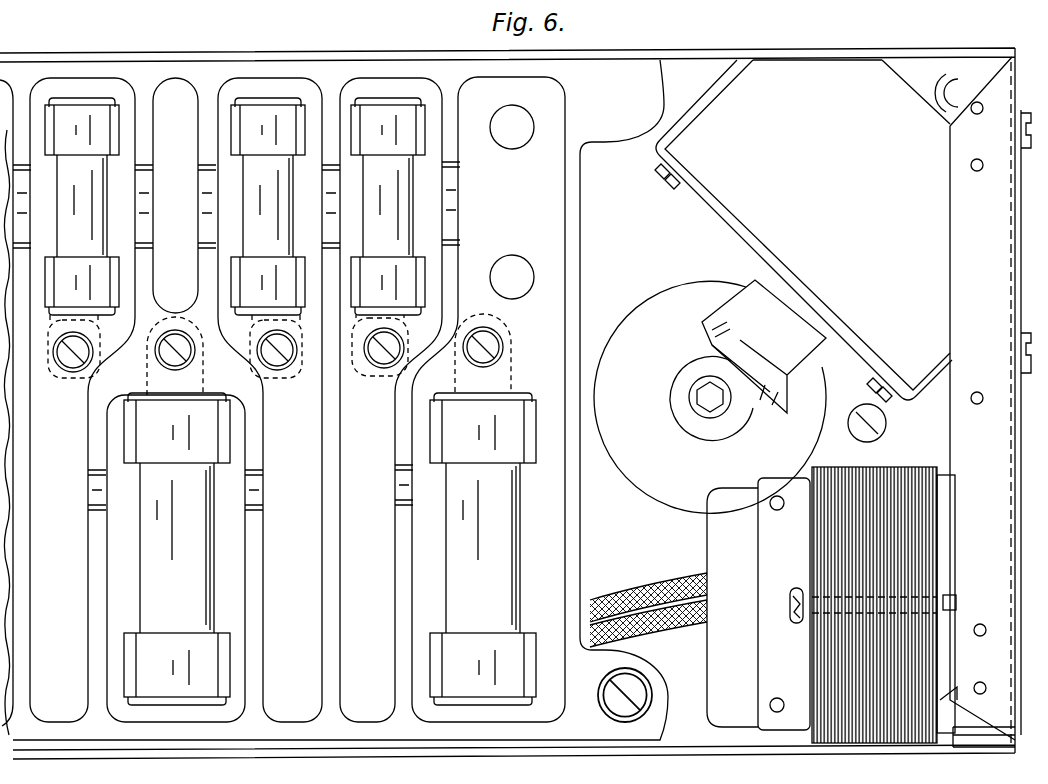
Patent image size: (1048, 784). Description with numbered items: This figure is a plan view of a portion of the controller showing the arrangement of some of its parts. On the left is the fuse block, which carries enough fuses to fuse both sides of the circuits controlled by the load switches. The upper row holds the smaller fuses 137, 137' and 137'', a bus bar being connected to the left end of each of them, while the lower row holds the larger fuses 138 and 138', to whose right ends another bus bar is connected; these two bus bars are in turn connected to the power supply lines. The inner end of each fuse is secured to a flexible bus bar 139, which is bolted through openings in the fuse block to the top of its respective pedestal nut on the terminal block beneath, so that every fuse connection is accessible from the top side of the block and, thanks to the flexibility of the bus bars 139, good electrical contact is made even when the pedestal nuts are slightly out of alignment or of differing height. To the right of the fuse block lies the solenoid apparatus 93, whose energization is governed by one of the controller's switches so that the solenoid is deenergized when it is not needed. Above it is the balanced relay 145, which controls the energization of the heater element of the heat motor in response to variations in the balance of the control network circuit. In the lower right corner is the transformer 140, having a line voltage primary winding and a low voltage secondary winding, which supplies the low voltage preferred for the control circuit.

The smaller fuse 137'' is at (74, 206).
The smaller fuse 137' is at (279, 206).
The smaller fuse 137 is at (399, 206).
The flexible bus bar 139 is at (88, 322).
The larger fuse 138' is at (170, 549).
The larger fuse 138 is at (476, 549).
The solenoid apparatus 93 is at (642, 415).
The balanced relay 145 is at (880, 229).
The transformer 140 is at (795, 666).